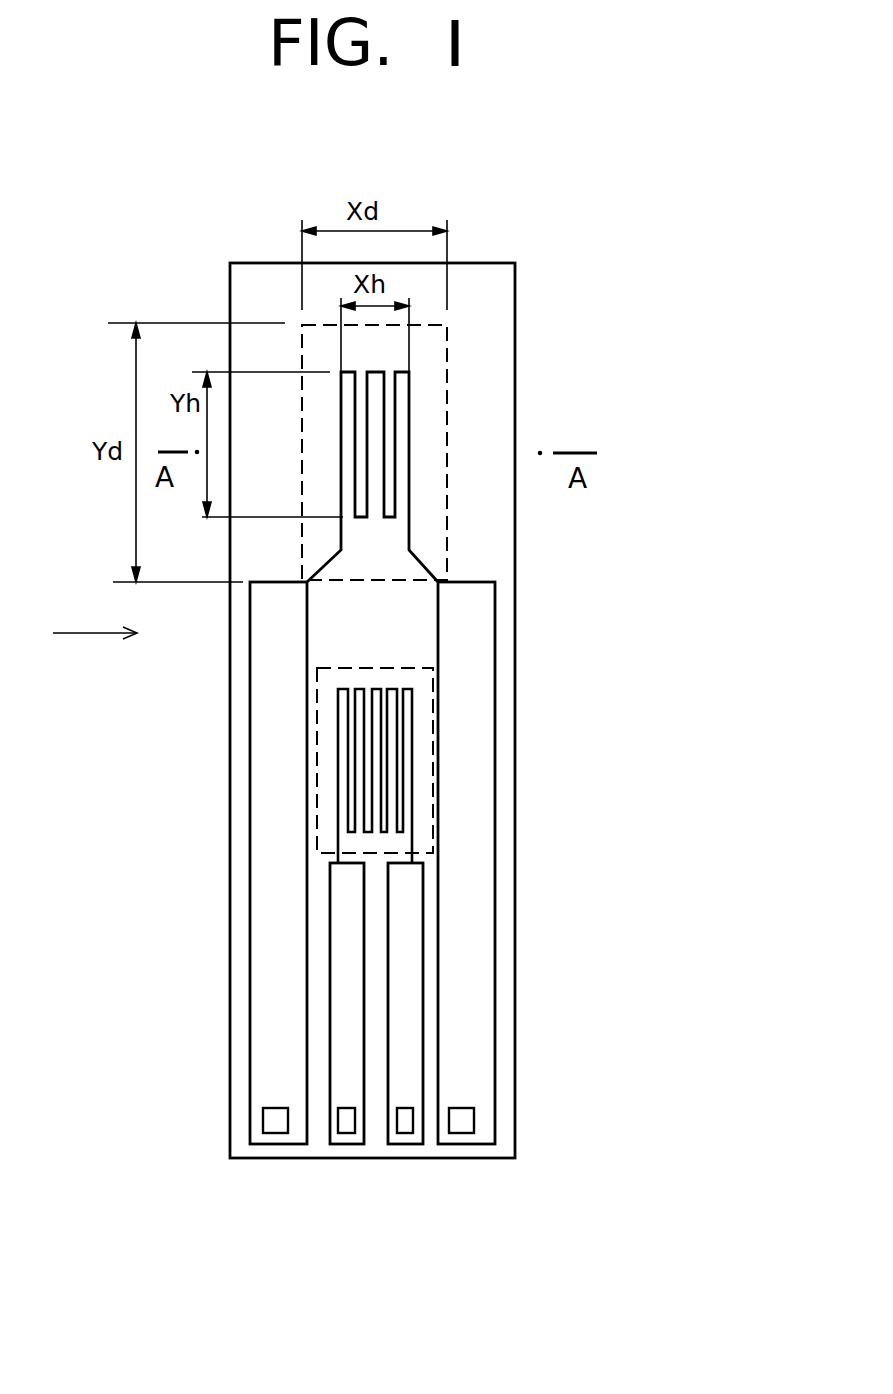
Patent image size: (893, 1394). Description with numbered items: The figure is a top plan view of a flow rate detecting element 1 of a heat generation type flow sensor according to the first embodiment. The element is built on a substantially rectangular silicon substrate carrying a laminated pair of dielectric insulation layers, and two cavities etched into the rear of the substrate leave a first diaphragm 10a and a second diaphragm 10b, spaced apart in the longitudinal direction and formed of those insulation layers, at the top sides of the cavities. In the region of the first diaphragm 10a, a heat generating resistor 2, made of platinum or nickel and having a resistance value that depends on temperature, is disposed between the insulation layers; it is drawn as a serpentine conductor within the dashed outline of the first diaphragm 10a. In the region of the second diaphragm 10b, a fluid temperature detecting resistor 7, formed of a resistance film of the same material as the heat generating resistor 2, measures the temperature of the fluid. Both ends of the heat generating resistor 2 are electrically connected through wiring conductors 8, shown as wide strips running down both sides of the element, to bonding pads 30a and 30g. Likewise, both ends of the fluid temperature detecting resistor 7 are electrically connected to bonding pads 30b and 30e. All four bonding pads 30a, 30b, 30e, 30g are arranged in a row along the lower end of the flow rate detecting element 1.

The flow rate detecting element 1 is at (489, 255).
The heat generating resistor 2 is at (403, 442).
The fluid temperature detecting resistor 7 is at (383, 772).
The wiring conductors 8 is at (278, 977).
The first diaphragm 10a is at (447, 357).
The second diaphragm 10b is at (433, 712).
The bonding pad 30a is at (345, 1125).
The bonding pad 30b is at (275, 1125).
The bonding pad 30e is at (462, 1125).
The bonding pad 30g is at (405, 1125).